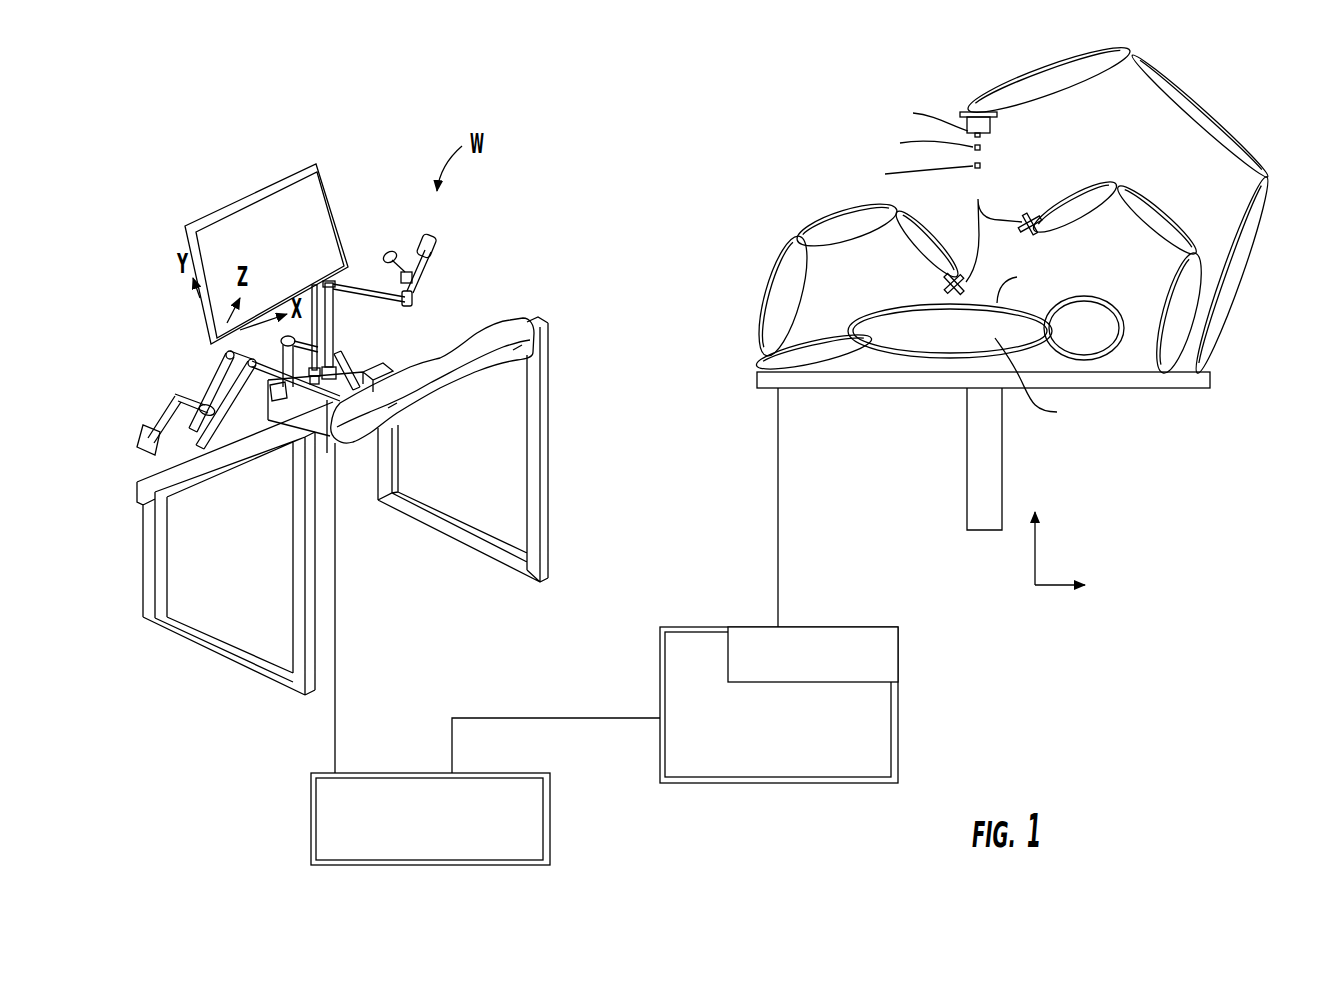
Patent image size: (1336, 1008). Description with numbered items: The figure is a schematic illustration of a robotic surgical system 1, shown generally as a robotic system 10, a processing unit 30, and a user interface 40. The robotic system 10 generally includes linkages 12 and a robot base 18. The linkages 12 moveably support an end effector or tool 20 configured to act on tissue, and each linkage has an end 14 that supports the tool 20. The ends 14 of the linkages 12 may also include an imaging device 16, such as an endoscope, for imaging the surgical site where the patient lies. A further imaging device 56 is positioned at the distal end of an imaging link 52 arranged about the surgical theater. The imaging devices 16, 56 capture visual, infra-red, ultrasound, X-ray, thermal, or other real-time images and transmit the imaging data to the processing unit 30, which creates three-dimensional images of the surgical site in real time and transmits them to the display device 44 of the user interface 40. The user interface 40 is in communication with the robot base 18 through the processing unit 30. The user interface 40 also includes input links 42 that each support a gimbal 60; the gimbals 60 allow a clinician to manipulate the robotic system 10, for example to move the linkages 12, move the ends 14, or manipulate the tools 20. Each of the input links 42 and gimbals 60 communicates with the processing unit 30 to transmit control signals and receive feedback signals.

The robotic surgical system 1 is at (545, 117).
The robotic system 10 is at (855, 97).
The linkages 12 is at (807, 187).
The end 14 is at (937, 283).
The imaging device 16 is at (958, 273).
The robot base 18 is at (791, 731).
The end effector or tool 20 is at (994, 226).
The processing unit 30 is at (443, 831).
The user interface 40 is at (197, 157).
The input links 42 is at (358, 278).
The display device 44 is at (330, 185).
The imaging link 52 is at (1222, 122).
The imaging device 56 is at (968, 123).
The gimbal 60 is at (445, 232).